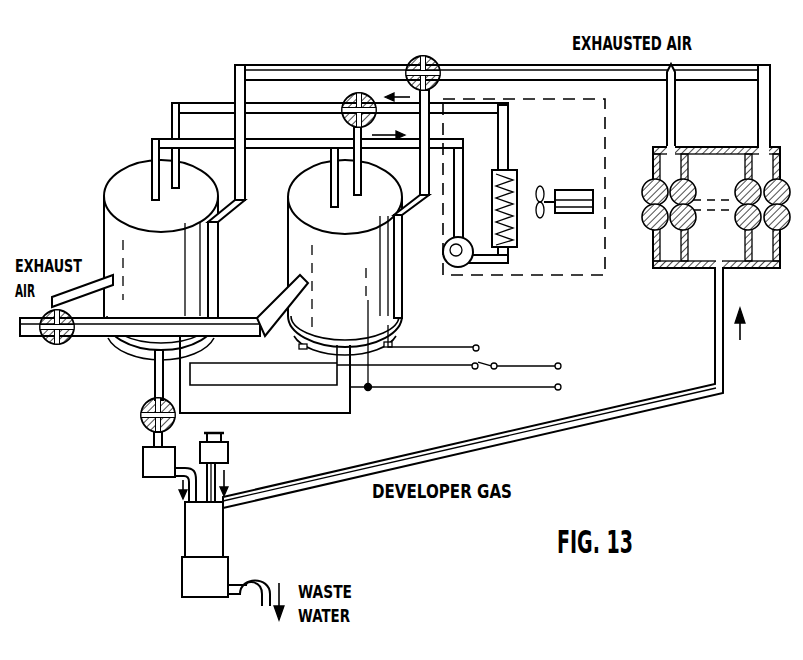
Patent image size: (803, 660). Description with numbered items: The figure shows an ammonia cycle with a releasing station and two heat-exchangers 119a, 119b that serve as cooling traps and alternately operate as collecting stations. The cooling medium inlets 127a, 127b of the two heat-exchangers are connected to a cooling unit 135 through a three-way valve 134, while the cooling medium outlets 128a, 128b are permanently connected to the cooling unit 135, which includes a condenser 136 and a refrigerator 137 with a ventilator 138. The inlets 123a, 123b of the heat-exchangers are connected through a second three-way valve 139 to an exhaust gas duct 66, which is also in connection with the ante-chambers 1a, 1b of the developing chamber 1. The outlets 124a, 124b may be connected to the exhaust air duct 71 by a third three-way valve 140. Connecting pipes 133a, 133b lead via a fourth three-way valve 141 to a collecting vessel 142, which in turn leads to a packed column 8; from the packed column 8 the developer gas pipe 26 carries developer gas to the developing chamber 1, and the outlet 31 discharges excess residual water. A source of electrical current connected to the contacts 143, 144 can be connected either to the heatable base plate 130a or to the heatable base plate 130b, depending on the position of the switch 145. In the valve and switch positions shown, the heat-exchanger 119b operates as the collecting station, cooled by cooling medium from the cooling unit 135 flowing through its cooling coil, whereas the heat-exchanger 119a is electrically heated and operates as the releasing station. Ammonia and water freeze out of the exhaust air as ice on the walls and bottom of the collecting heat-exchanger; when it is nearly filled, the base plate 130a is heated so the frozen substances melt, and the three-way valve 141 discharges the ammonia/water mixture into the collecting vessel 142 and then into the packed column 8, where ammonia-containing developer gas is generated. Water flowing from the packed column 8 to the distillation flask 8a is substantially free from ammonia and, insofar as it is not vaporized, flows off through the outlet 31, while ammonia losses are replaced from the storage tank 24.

The developing chamber 1 is at (714, 228).
The ante-chamber 1a is at (667, 252).
The ante-chamber 1b is at (768, 250).
The packed column 8 is at (215, 533).
The distillation flask 8a is at (184, 578).
The storage tank 24 is at (229, 450).
The developer gas pipe 26 is at (545, 435).
The outlet 31 is at (272, 567).
The exhaust gas duct 66 is at (500, 66).
The exhaust air duct 71 is at (28, 338).
The heat-exchanger 119a is at (114, 252).
The heat-exchanger 119b is at (300, 248).
The inlet 123a is at (234, 212).
The inlet 123b is at (420, 210).
The outlet 124a is at (88, 297).
The outlet 124b is at (271, 307).
The cooling medium inlet 127a is at (183, 101).
The cooling medium inlet 127b is at (343, 133).
The cooling medium outlet 128a is at (152, 160).
The cooling medium outlet 128b is at (332, 160).
The heatable base plate 130a is at (145, 353).
The heatable base plate 130b is at (306, 344).
The connecting pipe 133a is at (165, 386).
The connecting pipe 133b is at (352, 405).
The three-way valve 134 is at (357, 93).
The cooling unit 135 is at (549, 203).
The condenser 136 is at (456, 266).
The refrigerator 137 is at (517, 232).
The ventilator 138 is at (578, 213).
The three-way valve 139 is at (425, 56).
The three-way valve 140 is at (66, 345).
The three-way valve 141 is at (141, 419).
The collecting vessel 142 is at (143, 464).
The contact 143 is at (560, 364).
The contact 144 is at (556, 390).
The switch 145 is at (484, 362).